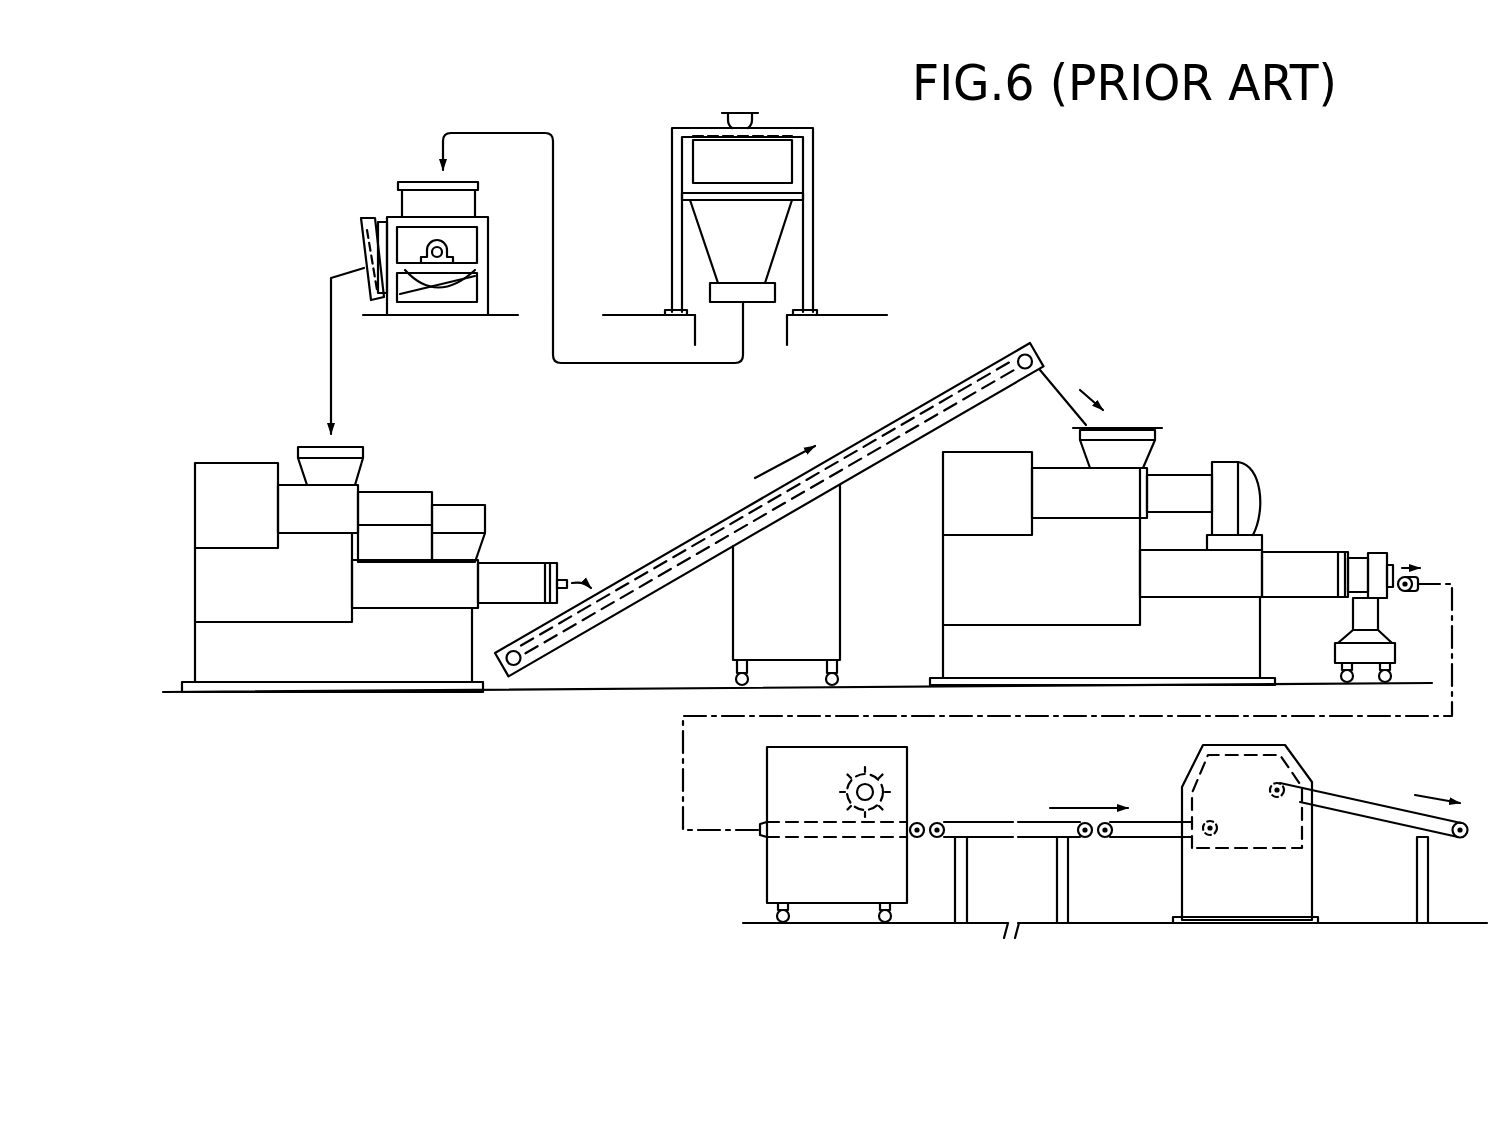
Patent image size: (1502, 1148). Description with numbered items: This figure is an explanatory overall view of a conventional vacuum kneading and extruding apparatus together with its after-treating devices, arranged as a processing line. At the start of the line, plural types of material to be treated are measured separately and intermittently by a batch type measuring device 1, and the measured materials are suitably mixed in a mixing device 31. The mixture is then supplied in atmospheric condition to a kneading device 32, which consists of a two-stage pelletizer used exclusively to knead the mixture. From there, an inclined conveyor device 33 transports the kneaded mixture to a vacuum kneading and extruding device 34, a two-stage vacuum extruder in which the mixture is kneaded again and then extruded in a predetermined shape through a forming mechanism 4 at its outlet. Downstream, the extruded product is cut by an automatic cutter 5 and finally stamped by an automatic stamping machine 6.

The batch type measuring device 1 is at (840, 175).
The mixing device 31 is at (381, 188).
The kneading device 32 is at (415, 460).
The conveyor device 33 is at (706, 524).
The vacuum kneading and extruding device 34 is at (1185, 451).
The forming mechanism 4 is at (1376, 533).
The automatic cutter 5 is at (912, 763).
The automatic stamping machine 6 is at (1316, 769).